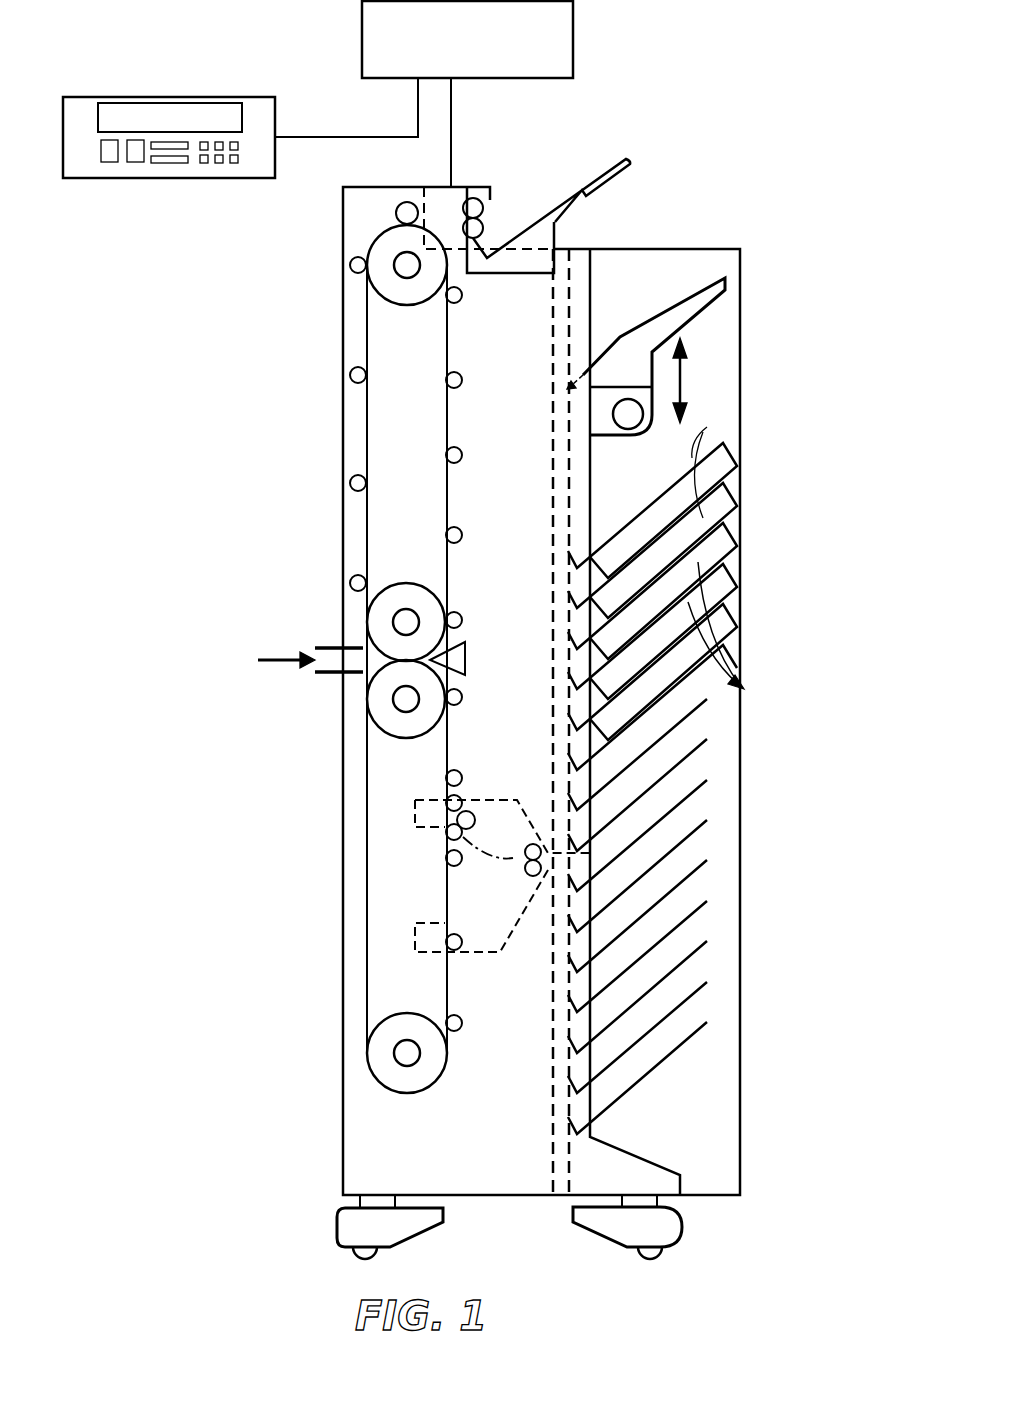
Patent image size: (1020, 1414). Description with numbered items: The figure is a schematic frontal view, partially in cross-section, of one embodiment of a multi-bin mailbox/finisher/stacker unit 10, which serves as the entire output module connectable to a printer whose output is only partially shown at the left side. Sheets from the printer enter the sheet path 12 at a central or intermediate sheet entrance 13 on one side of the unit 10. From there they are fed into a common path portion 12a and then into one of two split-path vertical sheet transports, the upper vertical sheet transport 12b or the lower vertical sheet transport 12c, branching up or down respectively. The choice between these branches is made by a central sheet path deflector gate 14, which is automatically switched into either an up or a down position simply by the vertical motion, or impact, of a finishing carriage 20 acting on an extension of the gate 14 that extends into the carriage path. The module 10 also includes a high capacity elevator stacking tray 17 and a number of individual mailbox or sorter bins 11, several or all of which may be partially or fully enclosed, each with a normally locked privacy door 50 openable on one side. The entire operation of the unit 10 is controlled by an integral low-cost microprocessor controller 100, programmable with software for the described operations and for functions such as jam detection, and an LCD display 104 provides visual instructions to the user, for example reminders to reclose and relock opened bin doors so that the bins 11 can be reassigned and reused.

The mailbox/finisher/stacker unit 10 is at (603, 144).
The mailbox bin 11 is at (737, 524).
The sheet path 12 is at (330, 632).
The common path portion 12a is at (357, 655).
The upper vertical sheet transport 12b is at (366, 407).
The lower vertical sheet transport 12c is at (366, 872).
The sheet entrance 13 is at (284, 657).
The sheet path deflector gate 14 is at (463, 650).
The high capacity elevator stacking tray 17 is at (702, 298).
The finishing carriage 20 is at (505, 965).
The privacy door 50 is at (732, 521).
The microprocessor controller 100 is at (563, 25).
The LCD display 104 is at (88, 97).